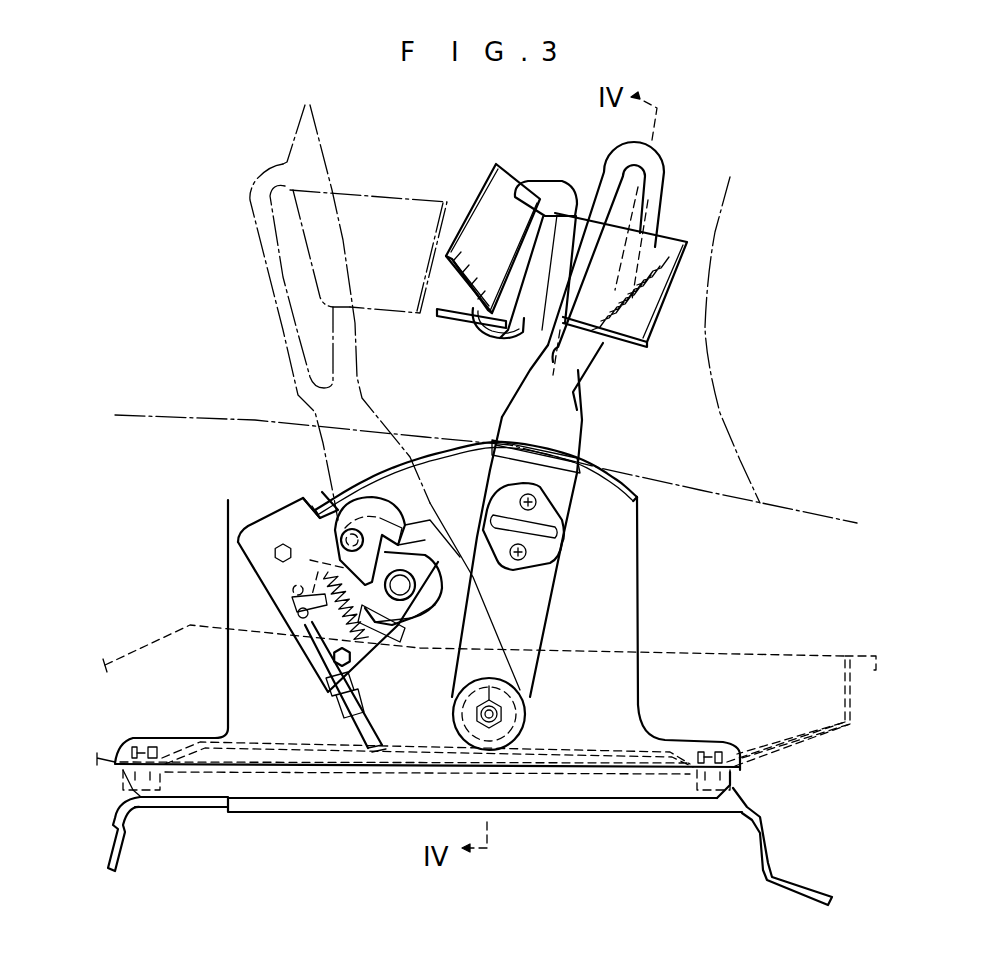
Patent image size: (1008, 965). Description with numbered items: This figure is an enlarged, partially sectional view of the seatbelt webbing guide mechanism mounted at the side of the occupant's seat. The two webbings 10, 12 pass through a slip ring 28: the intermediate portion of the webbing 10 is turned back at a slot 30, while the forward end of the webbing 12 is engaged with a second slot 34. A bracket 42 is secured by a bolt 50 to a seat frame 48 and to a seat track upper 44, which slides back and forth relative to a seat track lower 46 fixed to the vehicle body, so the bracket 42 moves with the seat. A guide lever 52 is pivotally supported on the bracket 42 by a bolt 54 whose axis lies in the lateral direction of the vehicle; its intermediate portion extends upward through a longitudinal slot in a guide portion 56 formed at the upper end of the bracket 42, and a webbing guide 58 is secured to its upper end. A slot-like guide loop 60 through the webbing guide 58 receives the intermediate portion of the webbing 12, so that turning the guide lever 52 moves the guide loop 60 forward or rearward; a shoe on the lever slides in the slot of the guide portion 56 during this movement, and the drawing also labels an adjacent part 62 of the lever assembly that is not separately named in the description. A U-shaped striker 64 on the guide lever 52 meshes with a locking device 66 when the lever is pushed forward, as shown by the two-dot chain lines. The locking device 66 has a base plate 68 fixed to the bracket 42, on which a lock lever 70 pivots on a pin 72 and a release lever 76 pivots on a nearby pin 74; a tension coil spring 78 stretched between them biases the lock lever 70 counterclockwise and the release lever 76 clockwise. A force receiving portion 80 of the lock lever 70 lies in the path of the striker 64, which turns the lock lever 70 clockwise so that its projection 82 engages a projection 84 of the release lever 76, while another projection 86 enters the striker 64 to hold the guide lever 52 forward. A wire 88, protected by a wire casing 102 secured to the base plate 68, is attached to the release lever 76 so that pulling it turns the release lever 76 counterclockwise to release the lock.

The webbing 10 is at (507, 185).
The webbing 12 is at (665, 240).
The slip ring 28 is at (577, 207).
The slot 30 is at (523, 262).
The slot 34 is at (510, 333).
The bracket 42 is at (633, 633).
The seat track upper 44 is at (737, 780).
The seat track lower 46 is at (730, 803).
The seat frame 48 is at (837, 730).
The bolt 50 is at (148, 747).
The guide lever 52 is at (533, 627).
The bolt 54 is at (500, 717).
The guide portion 56 is at (633, 487).
The webbing guide 58 is at (607, 343).
The guide loop 60 is at (645, 176).
The guide bar 62 is at (537, 442).
The striker 64 is at (550, 548).
The locking device 66 is at (361, 498).
The base plate 68 is at (256, 563).
The lock lever 70 is at (380, 497).
The pin 72 is at (350, 512).
The pin 74 is at (437, 588).
The release lever 76 is at (397, 627).
The tension coil spring 78 is at (297, 610).
The force receiving portion 80 is at (463, 557).
The projection 82 is at (370, 665).
The projection 84 is at (297, 510).
The projection 86 is at (388, 527).
The wire 88 is at (312, 667).
The wire casing 102 is at (370, 722).